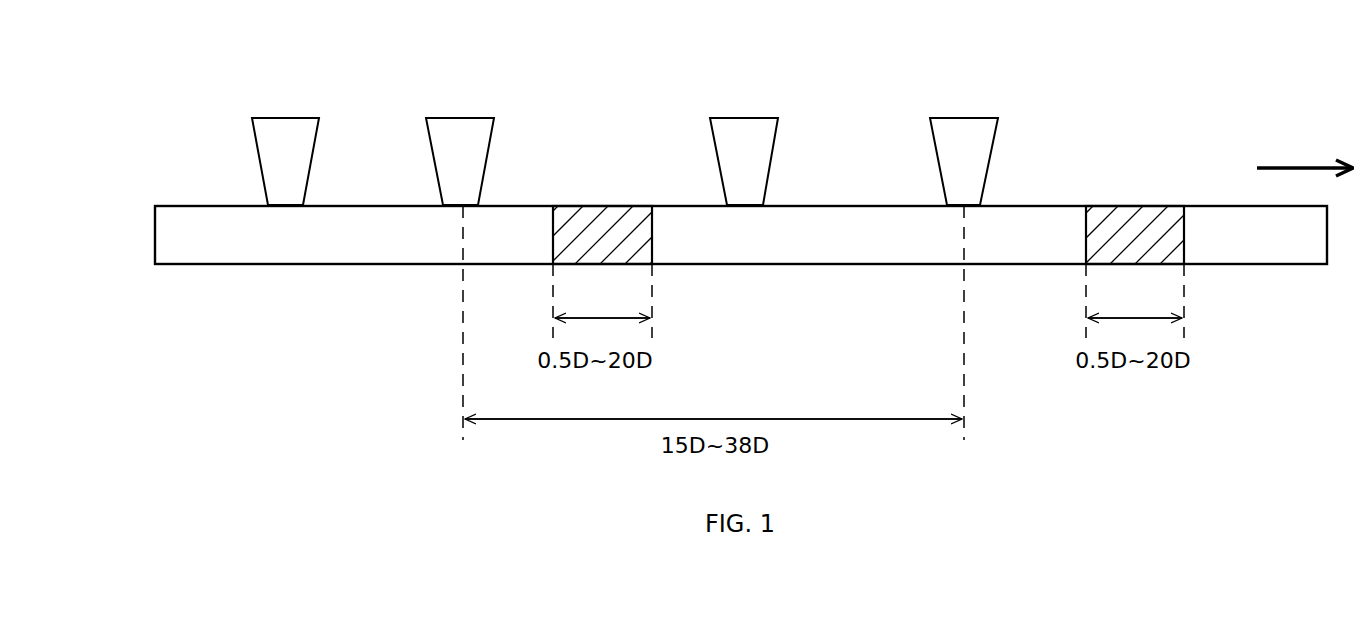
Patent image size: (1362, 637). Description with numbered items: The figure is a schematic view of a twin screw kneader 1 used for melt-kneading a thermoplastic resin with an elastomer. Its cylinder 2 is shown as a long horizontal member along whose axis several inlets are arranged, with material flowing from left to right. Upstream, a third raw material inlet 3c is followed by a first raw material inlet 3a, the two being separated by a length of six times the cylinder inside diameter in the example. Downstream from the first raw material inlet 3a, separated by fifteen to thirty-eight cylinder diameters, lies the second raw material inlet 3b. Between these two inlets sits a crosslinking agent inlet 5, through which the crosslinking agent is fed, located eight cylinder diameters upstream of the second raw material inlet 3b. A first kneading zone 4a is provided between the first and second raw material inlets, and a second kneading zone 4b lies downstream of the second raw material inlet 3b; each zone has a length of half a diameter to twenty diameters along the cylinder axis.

The twin screw kneader 1 is at (384, 385).
The cylinder 2 is at (217, 265).
The first raw material inlet 3a is at (458, 130).
The second raw material inlet 3b is at (965, 137).
The third raw material inlet 3c is at (283, 130).
The first kneading zone 4a is at (605, 225).
The second kneading zone 4b is at (1140, 225).
The crosslinking agent inlet 5 is at (740, 135).